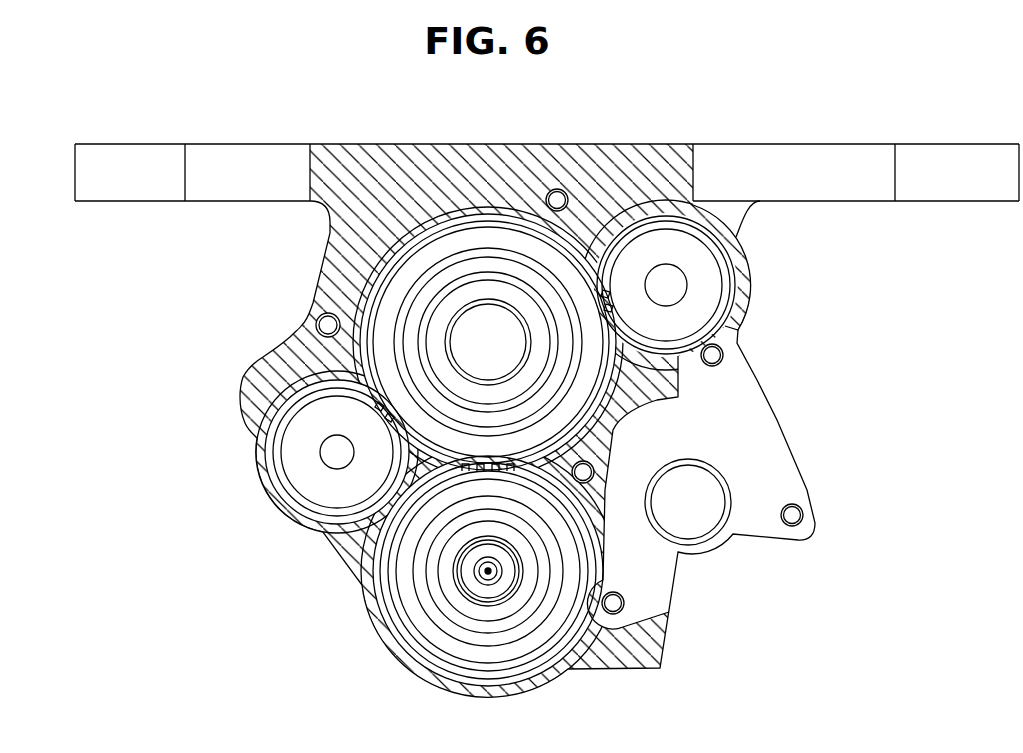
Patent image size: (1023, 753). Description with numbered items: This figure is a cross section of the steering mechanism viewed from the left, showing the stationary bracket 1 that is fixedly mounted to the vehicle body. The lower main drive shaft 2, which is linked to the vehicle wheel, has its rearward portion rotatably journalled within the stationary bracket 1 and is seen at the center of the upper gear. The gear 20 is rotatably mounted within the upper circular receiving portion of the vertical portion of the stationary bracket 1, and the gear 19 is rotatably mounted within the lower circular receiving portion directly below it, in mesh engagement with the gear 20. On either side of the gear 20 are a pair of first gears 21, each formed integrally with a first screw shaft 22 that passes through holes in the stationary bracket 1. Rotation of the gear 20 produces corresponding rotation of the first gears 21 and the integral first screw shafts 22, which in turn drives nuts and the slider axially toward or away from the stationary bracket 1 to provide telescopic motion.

The stationary bracket 1 is at (735, 143).
The lower main drive shaft 2 is at (470, 330).
The gear 19 is at (453, 651).
The gear 20 is at (508, 232).
The first gear 21 is at (700, 308).
The first screw shaft 22 is at (672, 288).